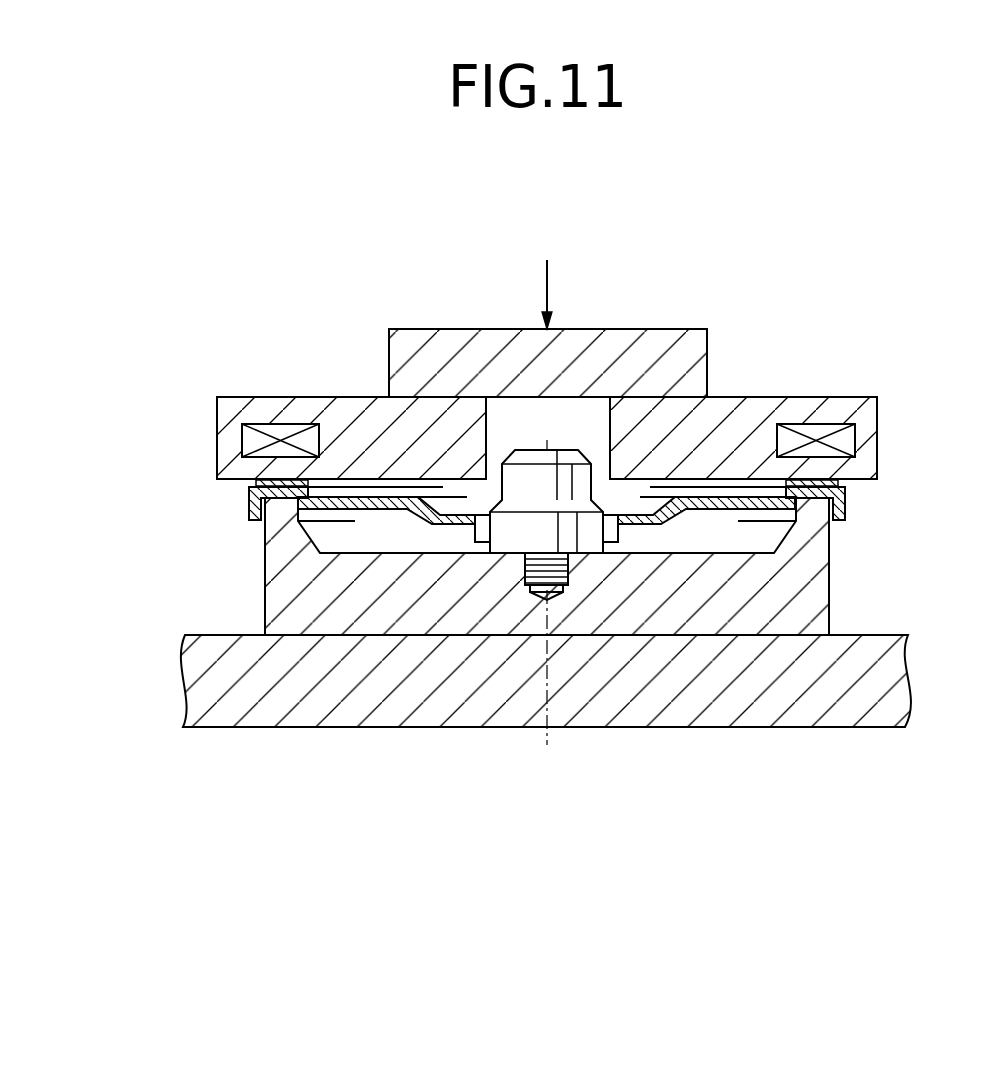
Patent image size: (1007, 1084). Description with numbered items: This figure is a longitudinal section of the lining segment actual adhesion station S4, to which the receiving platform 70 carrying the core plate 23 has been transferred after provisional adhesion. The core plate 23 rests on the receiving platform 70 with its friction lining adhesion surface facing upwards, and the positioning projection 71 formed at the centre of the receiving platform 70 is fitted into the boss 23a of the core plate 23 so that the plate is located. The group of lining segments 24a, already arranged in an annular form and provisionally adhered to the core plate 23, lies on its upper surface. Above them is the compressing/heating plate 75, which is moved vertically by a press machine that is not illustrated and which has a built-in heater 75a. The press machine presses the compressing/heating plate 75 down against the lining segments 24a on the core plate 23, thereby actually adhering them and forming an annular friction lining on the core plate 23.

The lining segment actual adhesion station S4 is at (920, 248).
The core plate 23 is at (592, 508).
The boss 23a is at (630, 525).
The lining segments 24a is at (279, 479).
The receiving platform 70 is at (283, 577).
The positioning projection 71 is at (523, 467).
The compressing/heating plate 75 is at (763, 405).
The heater 75a is at (845, 440).